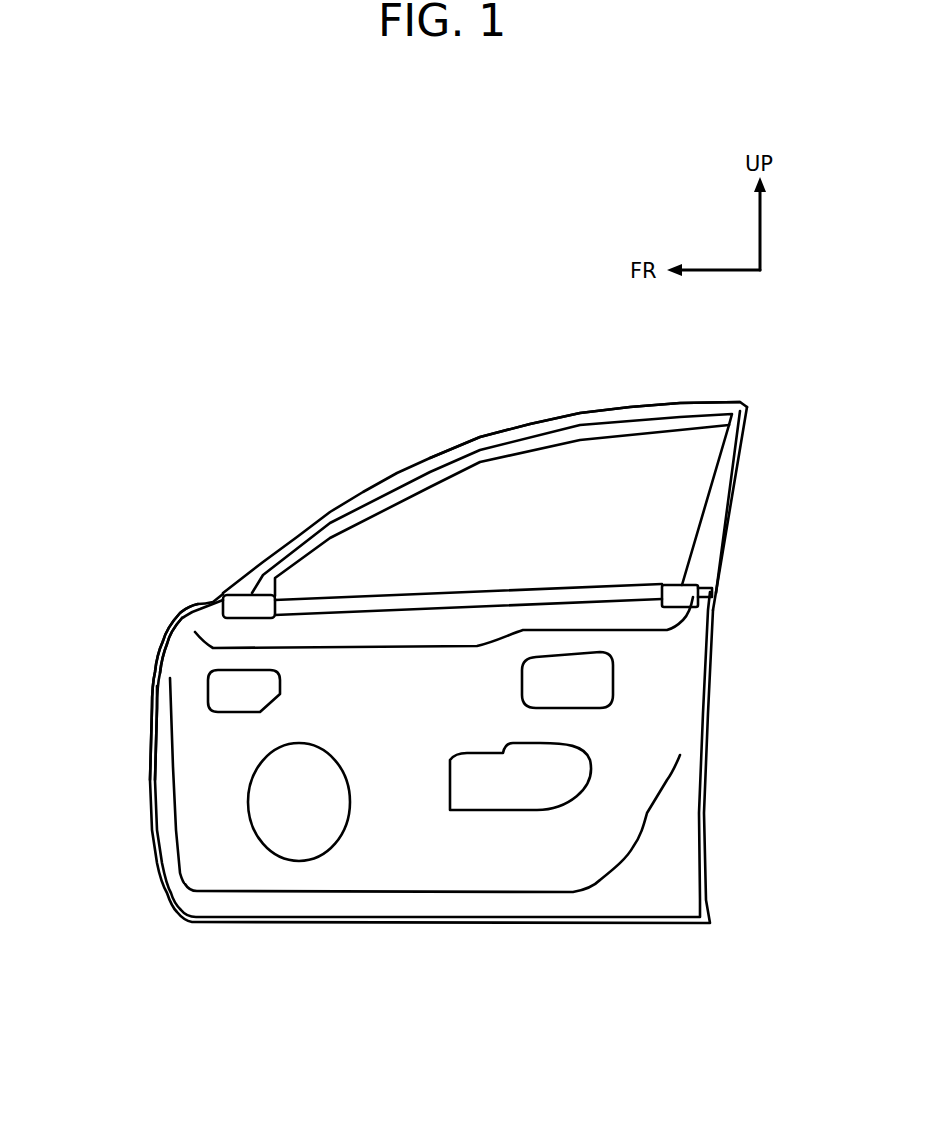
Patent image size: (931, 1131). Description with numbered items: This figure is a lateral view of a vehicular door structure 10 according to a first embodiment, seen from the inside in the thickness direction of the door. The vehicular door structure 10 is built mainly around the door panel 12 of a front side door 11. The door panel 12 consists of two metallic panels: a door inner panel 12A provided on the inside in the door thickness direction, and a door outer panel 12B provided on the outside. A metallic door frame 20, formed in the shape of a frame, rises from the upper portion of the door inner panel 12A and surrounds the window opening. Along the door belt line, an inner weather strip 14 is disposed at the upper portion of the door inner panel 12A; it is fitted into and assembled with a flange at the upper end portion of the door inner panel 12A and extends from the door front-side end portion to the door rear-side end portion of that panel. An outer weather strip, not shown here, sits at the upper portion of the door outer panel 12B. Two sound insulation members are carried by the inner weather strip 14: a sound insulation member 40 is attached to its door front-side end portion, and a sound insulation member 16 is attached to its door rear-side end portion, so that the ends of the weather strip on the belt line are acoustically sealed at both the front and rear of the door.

The vehicular door structure 10 is at (278, 410).
The front side door 11 is at (292, 522).
The door panel 12 is at (182, 607).
The door inner panel 12A is at (163, 637).
The door outer panel 12B is at (150, 697).
The inner weather strip 14 is at (642, 584).
The sound insulation member 16 is at (717, 593).
The door frame 20 is at (577, 411).
The sound insulation member 40 is at (252, 592).